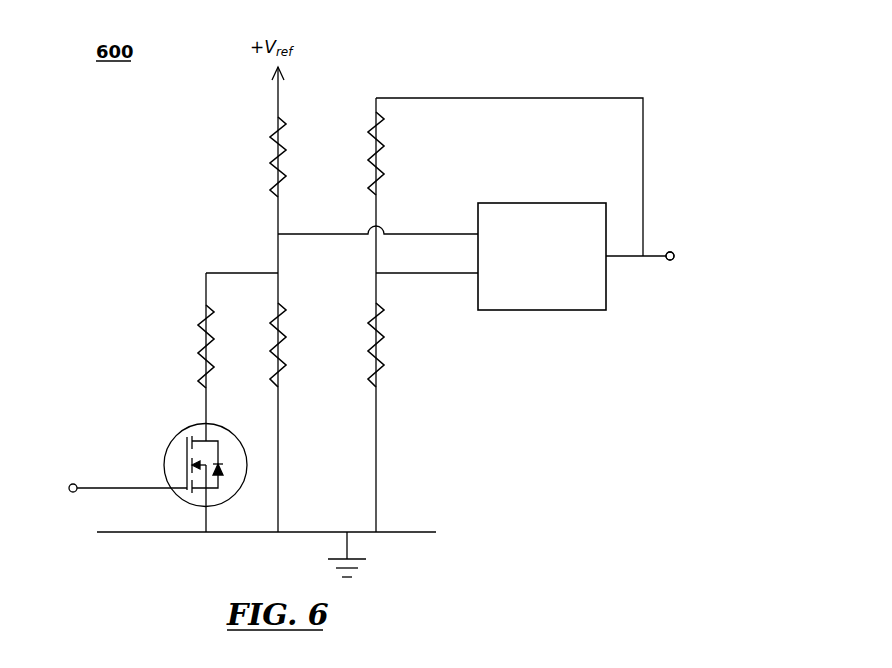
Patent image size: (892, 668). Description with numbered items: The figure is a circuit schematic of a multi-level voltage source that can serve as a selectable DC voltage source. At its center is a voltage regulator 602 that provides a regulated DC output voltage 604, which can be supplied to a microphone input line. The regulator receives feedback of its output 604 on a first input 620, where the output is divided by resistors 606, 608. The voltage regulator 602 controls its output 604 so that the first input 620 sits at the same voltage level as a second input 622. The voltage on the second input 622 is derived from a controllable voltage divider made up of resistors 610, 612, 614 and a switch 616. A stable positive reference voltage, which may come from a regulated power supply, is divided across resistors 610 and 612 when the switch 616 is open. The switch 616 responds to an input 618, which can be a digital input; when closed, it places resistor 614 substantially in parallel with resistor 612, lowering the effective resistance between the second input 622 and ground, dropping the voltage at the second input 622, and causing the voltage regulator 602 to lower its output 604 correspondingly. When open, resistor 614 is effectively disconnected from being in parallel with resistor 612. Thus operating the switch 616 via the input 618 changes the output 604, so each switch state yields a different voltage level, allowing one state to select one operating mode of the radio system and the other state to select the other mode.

The voltage regulator 602 is at (540, 311).
The regulated DC output voltage 604 is at (629, 257).
The resistor 606 is at (377, 177).
The resistor 608 is at (377, 368).
The resistor 610 is at (277, 141).
The resistor 612 is at (279, 339).
The resistor 614 is at (205, 325).
The switch 616 is at (167, 445).
The input 618 is at (100, 489).
The first input 620 is at (410, 274).
The second input 622 is at (409, 233).